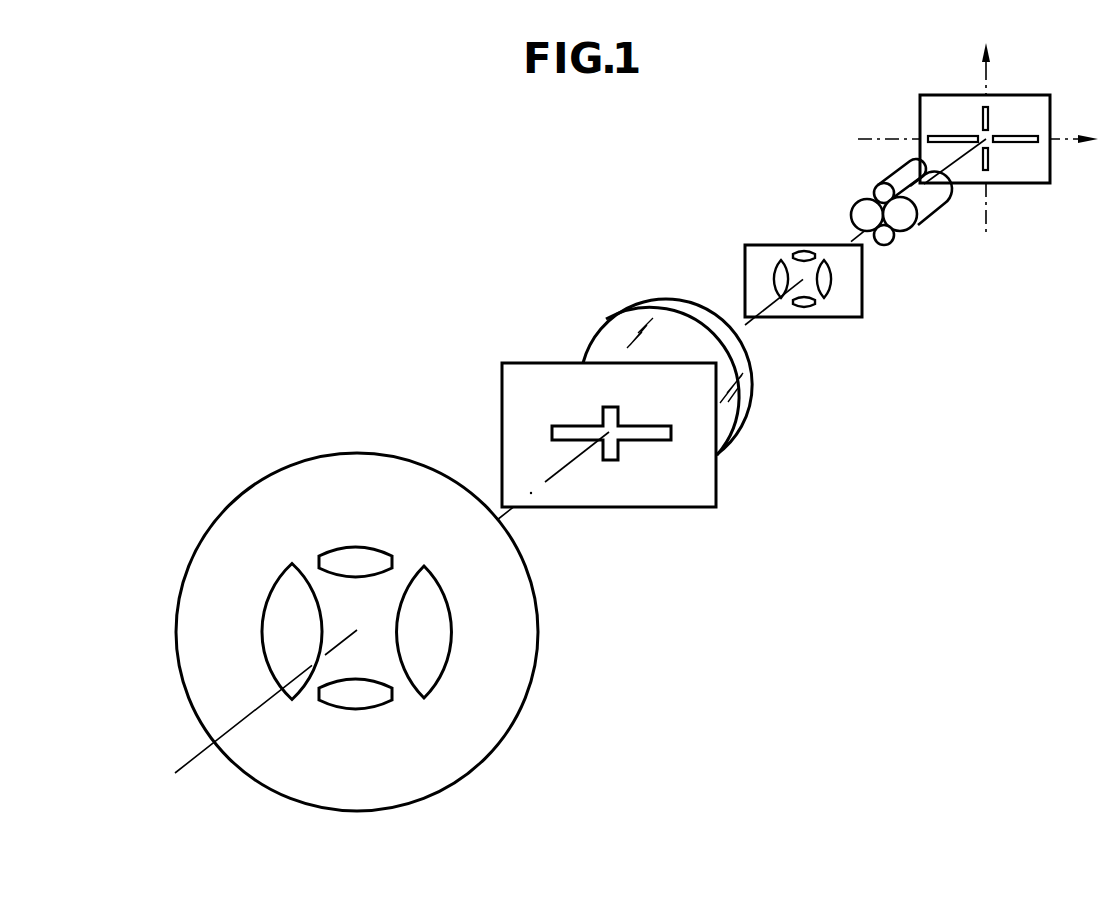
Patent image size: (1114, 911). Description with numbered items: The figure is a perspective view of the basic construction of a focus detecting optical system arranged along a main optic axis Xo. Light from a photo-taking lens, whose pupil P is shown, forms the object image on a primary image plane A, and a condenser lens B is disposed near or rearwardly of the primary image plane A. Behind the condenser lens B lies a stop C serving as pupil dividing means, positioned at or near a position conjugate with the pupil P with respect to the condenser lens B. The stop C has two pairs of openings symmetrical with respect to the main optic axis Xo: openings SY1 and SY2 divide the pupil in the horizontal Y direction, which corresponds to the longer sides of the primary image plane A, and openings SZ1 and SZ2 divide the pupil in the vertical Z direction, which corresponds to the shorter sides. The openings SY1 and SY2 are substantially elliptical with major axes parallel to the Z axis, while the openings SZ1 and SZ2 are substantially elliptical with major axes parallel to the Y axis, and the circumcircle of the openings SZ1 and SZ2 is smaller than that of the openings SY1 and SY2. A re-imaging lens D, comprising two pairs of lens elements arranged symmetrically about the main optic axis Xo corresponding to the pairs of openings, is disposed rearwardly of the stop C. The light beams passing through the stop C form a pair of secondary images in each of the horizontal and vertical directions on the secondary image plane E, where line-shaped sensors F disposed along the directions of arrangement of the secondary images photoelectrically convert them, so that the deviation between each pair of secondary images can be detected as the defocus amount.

The main optic axis Xo is at (203, 757).
The pupil of the photo-taking lens P is at (323, 455).
The primary image plane A is at (520, 363).
The condenser lens B is at (633, 296).
The stop C is at (762, 245).
The opening SY1 is at (774, 278).
The opening SY2 is at (831, 283).
The opening SZ1 is at (807, 252).
The opening SZ2 is at (803, 313).
The re-imaging lens D is at (872, 195).
The secondary image plane E is at (937, 95).
The line-shaped sensors F is at (1010, 137).
The Z direction Z is at (986, 119).
The Y direction Y is at (978, 124).